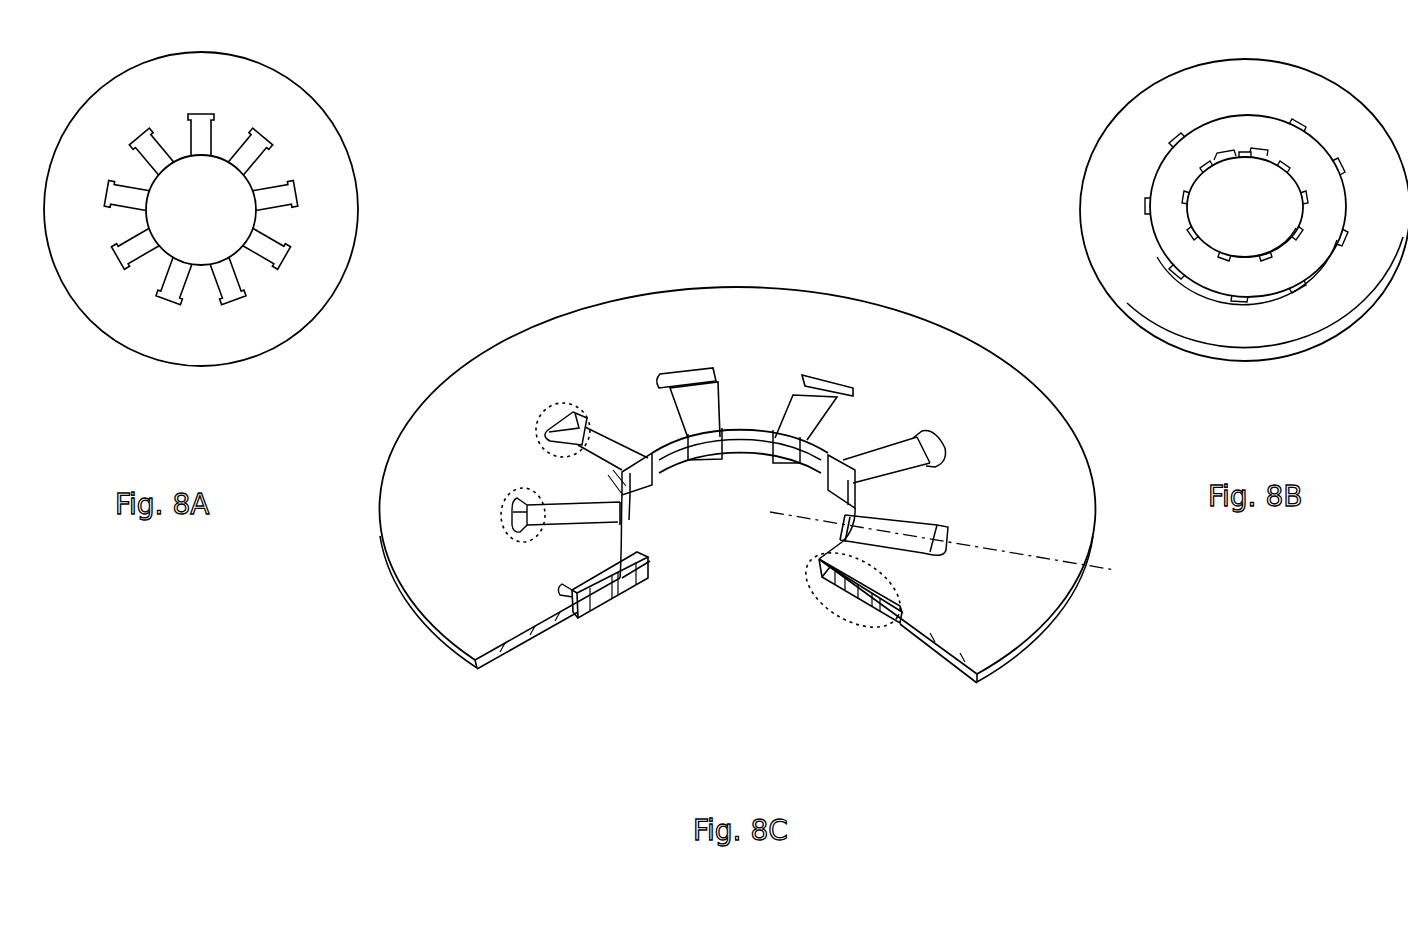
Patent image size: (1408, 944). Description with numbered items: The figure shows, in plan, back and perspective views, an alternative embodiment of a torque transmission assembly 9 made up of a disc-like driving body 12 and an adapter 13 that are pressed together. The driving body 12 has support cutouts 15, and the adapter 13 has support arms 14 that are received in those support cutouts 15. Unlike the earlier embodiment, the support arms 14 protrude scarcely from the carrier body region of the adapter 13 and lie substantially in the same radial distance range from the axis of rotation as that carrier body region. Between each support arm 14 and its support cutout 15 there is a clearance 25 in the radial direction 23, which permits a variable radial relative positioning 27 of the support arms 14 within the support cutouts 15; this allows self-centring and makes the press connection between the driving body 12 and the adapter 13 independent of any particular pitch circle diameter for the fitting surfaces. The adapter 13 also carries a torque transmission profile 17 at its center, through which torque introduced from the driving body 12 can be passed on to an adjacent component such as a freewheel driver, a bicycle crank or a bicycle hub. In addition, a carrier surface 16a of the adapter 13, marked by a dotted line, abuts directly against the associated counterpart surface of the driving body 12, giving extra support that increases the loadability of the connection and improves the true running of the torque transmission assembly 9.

In FIG. 8A, the torque transmission assembly 9 is at (427, 142).
In FIG. 8B, the torque transmission assembly 9 is at (1080, 102).
In FIG. 8C, the torque transmission assembly 9 is at (760, 214).
In FIG. 8A, the driving body 12 is at (158, 337).
In FIG. 8B, the driving body 12 is at (1303, 320).
In FIG. 8C, the driving body 12 is at (408, 500).
In FIG. 8A, the adapter 13 is at (181, 167).
In FIG. 8B, the adapter 13 is at (1160, 183).
In FIG. 8C, the adapter 13 is at (652, 612).
In FIG. 8A, the support arms 14 is at (247, 152).
In FIG. 8C, the support arms 14 is at (805, 410).
In FIG. 8C, the support cutouts 15 is at (945, 521).
In FIG. 8B, the carrier surface 16a is at (1258, 277).
In FIG. 8C, the carrier surface 16a is at (840, 588).
In FIG. 8B, the torque transmission profile 17 is at (1222, 170).
In FIG. 8C, the torque transmission profile 17 is at (662, 471).
In FIG. 8C, the radial direction 23 is at (991, 548).
In FIG. 8C, the clearance 25 is at (555, 410).
In FIG. 8C, the variable radial relative positioning 27 is at (857, 529).